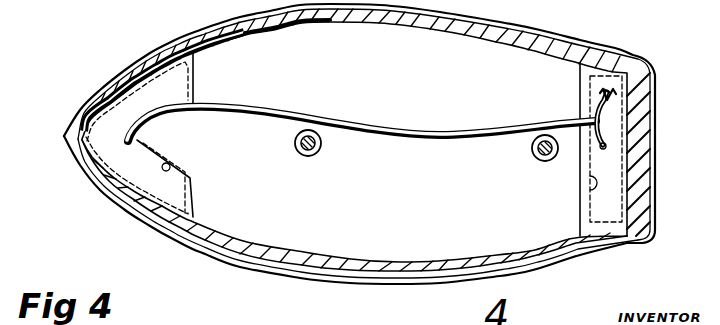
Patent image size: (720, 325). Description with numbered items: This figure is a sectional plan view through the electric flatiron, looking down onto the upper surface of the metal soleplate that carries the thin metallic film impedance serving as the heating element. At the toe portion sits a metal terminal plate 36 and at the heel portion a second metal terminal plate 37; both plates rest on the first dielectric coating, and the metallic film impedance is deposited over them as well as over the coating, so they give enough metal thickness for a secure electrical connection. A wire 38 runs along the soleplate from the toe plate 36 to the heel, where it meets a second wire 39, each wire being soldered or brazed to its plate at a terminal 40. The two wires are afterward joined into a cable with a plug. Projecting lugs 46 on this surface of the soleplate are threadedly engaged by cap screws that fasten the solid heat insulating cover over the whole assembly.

The metal terminal plate 36 is at (172, 165).
The metal terminal plate 37 is at (588, 188).
The wire 38 is at (266, 110).
The wire 39 is at (604, 131).
The terminal 40 is at (82, 124).
The projecting lug 46 is at (320, 153).